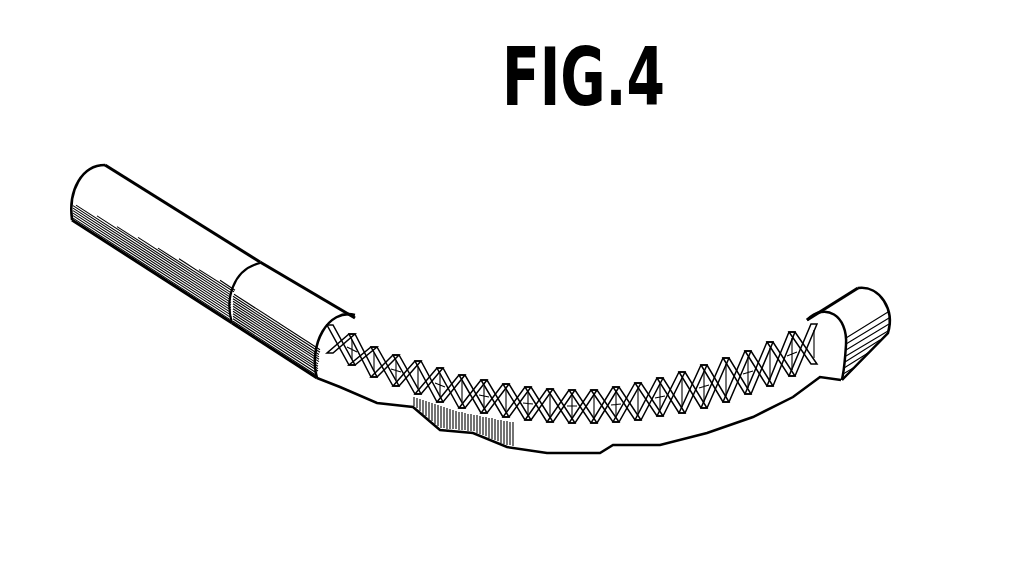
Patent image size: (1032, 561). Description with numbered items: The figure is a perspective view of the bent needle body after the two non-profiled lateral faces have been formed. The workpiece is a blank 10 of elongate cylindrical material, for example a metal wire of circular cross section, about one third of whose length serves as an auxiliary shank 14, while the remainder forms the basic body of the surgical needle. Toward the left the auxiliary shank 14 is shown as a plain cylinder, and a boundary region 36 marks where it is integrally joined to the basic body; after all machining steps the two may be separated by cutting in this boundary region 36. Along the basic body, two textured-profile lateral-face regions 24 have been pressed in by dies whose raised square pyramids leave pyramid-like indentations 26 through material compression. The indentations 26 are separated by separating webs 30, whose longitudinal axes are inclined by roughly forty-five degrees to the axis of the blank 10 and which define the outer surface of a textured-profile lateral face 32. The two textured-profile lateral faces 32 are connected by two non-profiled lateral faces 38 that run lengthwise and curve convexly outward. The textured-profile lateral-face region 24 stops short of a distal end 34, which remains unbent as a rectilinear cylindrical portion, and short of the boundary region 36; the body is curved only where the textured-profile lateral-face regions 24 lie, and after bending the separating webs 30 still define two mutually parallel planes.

The blank 10 is at (319, 291).
The auxiliary shank 14 is at (147, 198).
The textured-profile lateral-face region 24 is at (696, 378).
The pyramid-like indentations 26 is at (396, 350).
The separating webs 30 is at (464, 395).
The textured-profile lateral face 32 is at (567, 393).
The distal end 34 is at (845, 298).
The boundary region 36 is at (242, 272).
The non-profiled lateral faces 38 is at (553, 433).